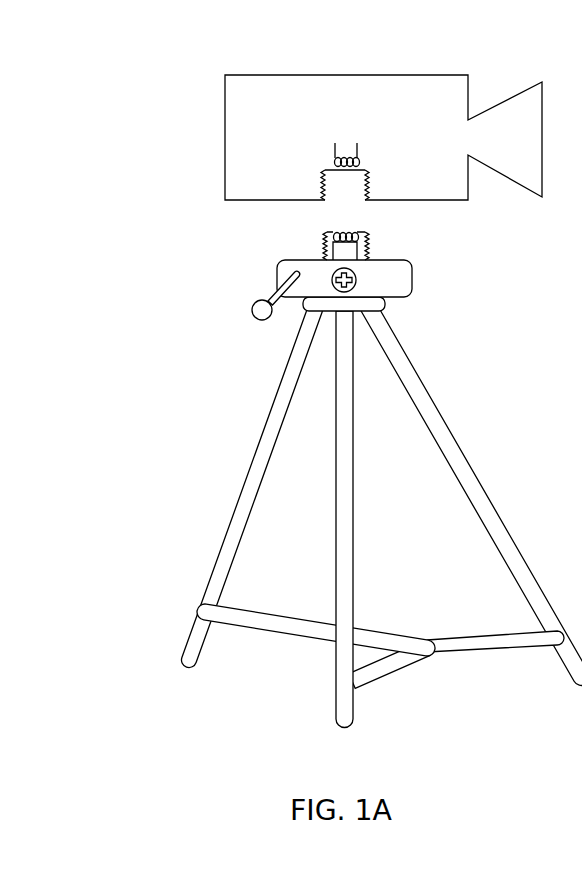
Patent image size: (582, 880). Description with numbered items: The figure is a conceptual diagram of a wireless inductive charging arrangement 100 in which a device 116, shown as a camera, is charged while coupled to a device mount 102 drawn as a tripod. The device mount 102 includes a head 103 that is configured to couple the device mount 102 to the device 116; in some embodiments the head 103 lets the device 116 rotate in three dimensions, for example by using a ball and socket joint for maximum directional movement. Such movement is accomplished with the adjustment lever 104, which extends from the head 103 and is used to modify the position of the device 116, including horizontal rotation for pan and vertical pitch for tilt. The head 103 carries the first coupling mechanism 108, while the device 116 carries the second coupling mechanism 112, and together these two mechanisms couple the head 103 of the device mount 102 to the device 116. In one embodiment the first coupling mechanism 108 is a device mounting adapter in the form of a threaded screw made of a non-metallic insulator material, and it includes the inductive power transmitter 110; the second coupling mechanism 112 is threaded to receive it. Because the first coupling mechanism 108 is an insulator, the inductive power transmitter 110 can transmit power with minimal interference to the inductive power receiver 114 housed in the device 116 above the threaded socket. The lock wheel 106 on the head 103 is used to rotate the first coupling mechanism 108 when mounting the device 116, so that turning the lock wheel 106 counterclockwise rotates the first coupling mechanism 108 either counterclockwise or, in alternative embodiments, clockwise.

The tripod system 100 is at (381, 512).
The device mount 102 is at (457, 438).
The head 103 is at (412, 272).
The adjustment lever 104 is at (250, 308).
The lock wheel 106 is at (357, 278).
The first coupling mechanism 108 is at (327, 234).
The inductive power transmitter 110 is at (365, 233).
The second coupling mechanism 112 is at (363, 172).
The inductive power receiver 114 is at (334, 147).
The device 116 is at (367, 75).